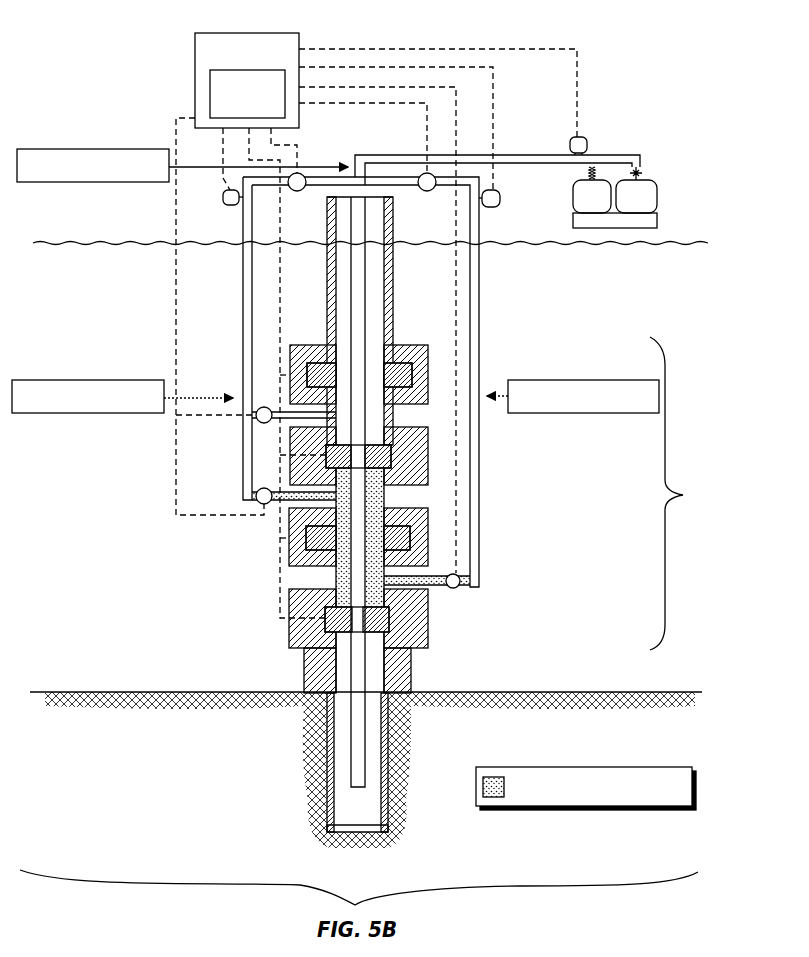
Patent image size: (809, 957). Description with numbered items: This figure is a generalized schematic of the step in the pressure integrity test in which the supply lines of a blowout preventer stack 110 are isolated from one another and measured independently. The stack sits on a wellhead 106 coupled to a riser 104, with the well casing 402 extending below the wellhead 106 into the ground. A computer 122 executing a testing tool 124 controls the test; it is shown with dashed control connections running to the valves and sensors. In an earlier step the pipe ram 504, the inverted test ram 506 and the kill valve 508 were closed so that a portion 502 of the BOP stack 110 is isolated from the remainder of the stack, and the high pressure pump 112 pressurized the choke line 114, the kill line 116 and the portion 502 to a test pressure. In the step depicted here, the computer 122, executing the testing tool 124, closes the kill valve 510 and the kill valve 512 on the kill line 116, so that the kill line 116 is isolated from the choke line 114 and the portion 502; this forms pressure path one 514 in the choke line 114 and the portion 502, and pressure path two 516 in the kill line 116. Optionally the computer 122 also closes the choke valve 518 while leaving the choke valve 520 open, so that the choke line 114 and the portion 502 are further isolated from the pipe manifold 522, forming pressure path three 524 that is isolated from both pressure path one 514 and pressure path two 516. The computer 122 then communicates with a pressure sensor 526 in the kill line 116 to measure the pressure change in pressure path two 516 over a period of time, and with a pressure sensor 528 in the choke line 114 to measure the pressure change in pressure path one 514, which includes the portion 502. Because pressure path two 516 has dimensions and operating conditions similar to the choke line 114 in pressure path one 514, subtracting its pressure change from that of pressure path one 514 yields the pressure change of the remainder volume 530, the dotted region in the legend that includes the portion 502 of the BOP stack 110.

The computer 122 is at (201, 33).
The testing tool 124 is at (210, 92).
The pressure path 3 524 is at (97, 149).
The pressure path 2 516 is at (90, 380).
The pressure path 1 514 is at (586, 380).
The pipe manifold 522 is at (540, 155).
The high pressure pump 112 is at (657, 197).
The choke line 114 is at (479, 365).
The kill line 116 is at (243, 333).
The kill valve 512 is at (298, 191).
The choke valve 518 is at (427, 191).
The pressure sensor 526 is at (231, 205).
The pressure sensor 528 is at (492, 207).
The riser 104 is at (393, 318).
The kill valve 508 is at (262, 407).
The pipe ram 504 is at (392, 458).
The kill valve 510 is at (262, 488).
The portion of the BOP stack 502 is at (336, 572).
The inverted test ram 506 is at (390, 620).
The choke valve 520 is at (462, 573).
The well casing 402 is at (388, 740).
The wellhead 106 is at (304, 655).
The remainder volume 530 is at (585, 767).
The blowout preventer stack 110 is at (687, 493).